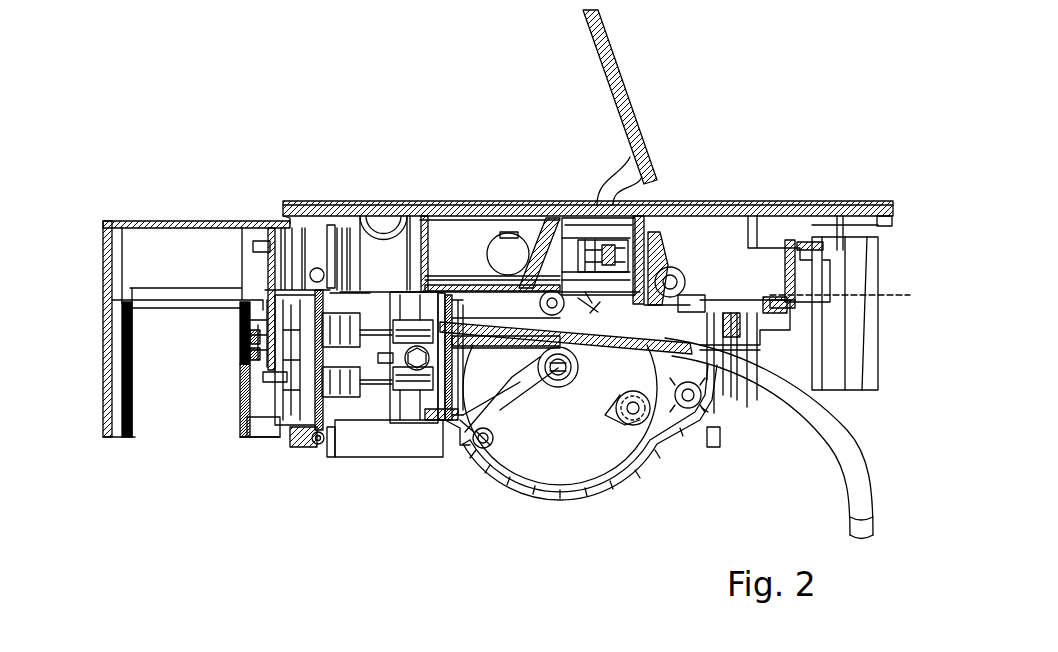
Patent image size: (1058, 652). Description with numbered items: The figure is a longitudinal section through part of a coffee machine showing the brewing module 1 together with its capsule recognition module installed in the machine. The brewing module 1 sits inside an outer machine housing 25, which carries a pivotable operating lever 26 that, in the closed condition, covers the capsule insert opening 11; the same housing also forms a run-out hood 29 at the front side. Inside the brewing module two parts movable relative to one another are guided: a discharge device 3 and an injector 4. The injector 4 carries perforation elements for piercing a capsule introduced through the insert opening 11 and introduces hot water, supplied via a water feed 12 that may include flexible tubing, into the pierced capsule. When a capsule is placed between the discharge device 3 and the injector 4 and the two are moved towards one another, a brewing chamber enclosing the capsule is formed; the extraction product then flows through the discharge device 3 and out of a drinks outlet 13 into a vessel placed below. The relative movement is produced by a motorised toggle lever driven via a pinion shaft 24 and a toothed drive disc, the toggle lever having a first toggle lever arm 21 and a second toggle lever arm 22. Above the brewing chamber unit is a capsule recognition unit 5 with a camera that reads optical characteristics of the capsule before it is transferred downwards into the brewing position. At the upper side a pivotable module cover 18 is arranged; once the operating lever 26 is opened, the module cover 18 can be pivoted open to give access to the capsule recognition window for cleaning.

The brewing module 1 is at (395, 485).
The discharge device 3 is at (293, 440).
The injector 4 is at (429, 400).
The capsule recognition unit 5 is at (567, 228).
The capsule insert opening 11 is at (388, 223).
The water feed 12 is at (656, 358).
The drinks outlet 13 is at (240, 428).
The module cover 18 is at (560, 215).
The first toggle lever arm 21 is at (505, 413).
The second toggle lever arm 22 is at (472, 402).
The pinion shaft 24 is at (527, 246).
The outer machine housing 25 is at (661, 200).
The operating lever 26 is at (625, 90).
The run-out hood 29 is at (222, 220).